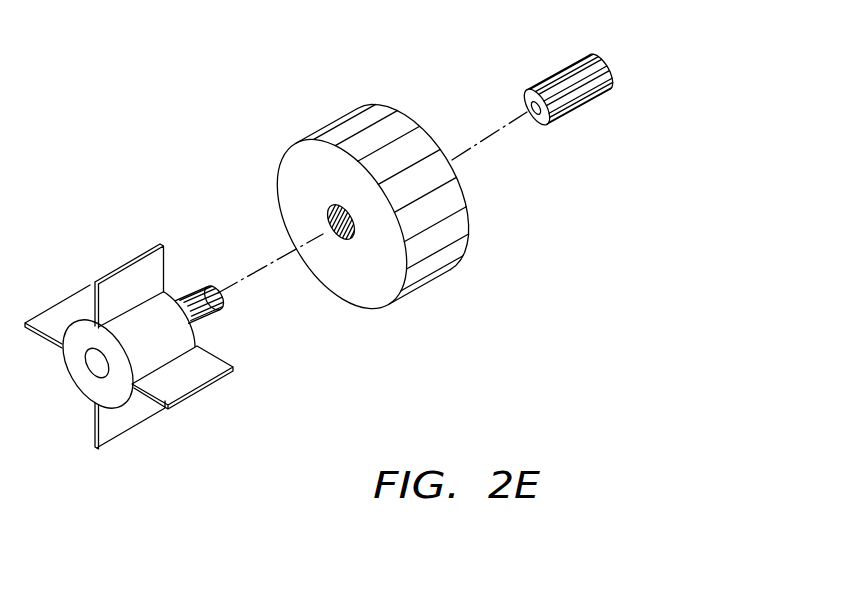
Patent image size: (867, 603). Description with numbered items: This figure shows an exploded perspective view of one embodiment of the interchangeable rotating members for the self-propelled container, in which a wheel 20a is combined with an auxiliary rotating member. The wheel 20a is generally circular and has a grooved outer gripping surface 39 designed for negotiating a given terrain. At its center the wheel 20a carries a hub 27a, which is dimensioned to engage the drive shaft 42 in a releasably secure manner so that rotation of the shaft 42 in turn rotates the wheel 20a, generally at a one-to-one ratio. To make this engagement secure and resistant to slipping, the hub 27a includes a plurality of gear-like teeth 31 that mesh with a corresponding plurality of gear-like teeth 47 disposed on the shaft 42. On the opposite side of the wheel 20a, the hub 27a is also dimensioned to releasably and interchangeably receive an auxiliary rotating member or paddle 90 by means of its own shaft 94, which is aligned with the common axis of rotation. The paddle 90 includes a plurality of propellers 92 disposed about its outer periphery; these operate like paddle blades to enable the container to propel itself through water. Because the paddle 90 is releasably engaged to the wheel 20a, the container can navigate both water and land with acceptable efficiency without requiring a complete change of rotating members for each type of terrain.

The wheel 20a is at (440, 284).
The outer gripping surface 39 is at (368, 118).
The hub 27a is at (327, 222).
The gear-like teeth 31 is at (343, 238).
The shaft 42 is at (600, 104).
The gear-like teeth 47 is at (570, 65).
The paddle 90 is at (144, 431).
The propellers 92 is at (132, 256).
The shaft 94 is at (202, 287).